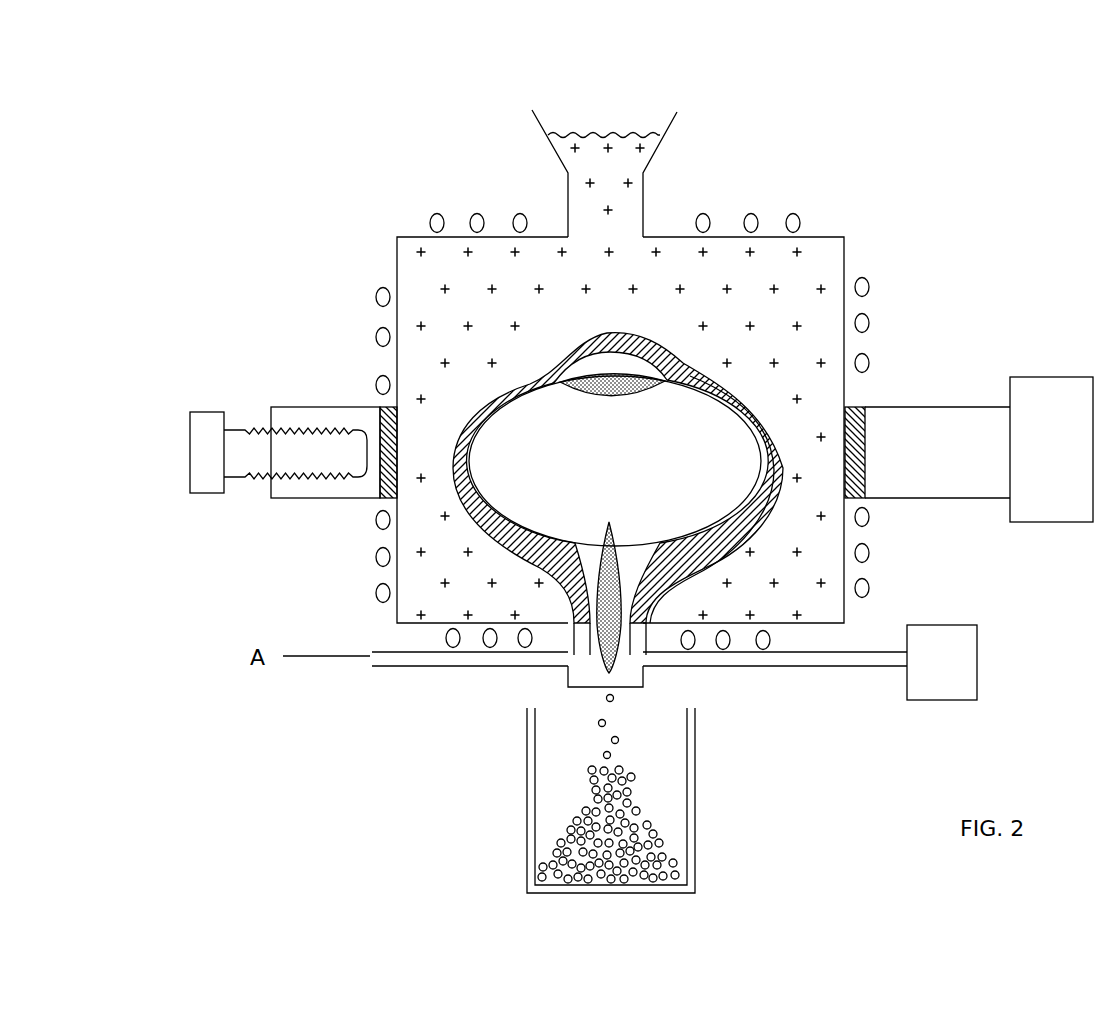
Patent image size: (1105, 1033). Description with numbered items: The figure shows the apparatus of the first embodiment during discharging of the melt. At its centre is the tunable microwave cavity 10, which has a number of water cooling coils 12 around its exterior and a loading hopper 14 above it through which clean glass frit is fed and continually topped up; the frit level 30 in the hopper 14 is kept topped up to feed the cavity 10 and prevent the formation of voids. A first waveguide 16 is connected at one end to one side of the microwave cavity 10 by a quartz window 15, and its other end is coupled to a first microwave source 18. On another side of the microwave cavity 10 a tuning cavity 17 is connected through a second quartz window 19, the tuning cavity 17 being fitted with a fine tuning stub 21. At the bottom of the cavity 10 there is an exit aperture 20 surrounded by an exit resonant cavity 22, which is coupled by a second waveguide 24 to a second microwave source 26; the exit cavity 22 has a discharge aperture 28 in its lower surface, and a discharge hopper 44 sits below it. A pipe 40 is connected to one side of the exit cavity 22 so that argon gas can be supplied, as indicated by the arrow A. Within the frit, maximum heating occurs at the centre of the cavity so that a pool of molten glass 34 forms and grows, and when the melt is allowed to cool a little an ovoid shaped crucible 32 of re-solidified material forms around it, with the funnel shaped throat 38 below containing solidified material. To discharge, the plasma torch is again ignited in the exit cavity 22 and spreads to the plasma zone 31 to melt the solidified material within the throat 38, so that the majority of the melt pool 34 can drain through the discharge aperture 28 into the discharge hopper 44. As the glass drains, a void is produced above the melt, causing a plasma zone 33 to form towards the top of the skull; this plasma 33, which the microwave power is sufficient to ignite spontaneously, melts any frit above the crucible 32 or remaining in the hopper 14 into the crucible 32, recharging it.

The tunable microwave cavity 10 is at (828, 224).
The water cooling coils 12 is at (868, 353).
The loading hopper 14 is at (550, 142).
The quartz window 15 is at (870, 452).
The first waveguide 16 is at (930, 498).
The tuning cavity 17 is at (322, 413).
The first microwave source 18 is at (1065, 456).
The second quartz window 19 is at (376, 481).
The exit aperture 20 is at (577, 607).
The fine tuning stub 21 is at (207, 417).
The exit resonant cavity 22 is at (565, 673).
The second waveguide 24 is at (798, 660).
The second microwave source 26 is at (953, 673).
The discharge aperture 28 is at (600, 700).
The feed material 30 is at (632, 120).
The plasma zone 31 is at (627, 597).
The crucible 32 is at (712, 378).
The plasma zone 33 is at (608, 408).
The pool of molten glass 34 is at (624, 473).
The throat 38 is at (640, 588).
The pipe 40 is at (360, 670).
The discharge hopper 44 is at (697, 832).